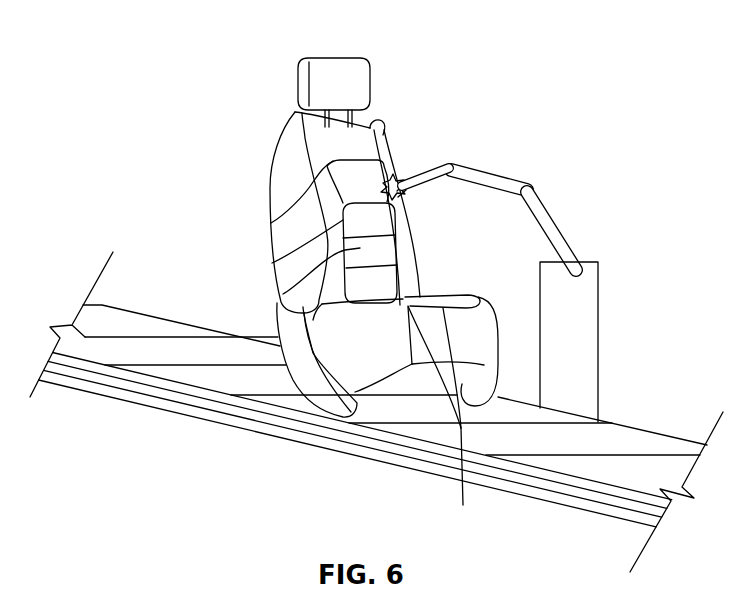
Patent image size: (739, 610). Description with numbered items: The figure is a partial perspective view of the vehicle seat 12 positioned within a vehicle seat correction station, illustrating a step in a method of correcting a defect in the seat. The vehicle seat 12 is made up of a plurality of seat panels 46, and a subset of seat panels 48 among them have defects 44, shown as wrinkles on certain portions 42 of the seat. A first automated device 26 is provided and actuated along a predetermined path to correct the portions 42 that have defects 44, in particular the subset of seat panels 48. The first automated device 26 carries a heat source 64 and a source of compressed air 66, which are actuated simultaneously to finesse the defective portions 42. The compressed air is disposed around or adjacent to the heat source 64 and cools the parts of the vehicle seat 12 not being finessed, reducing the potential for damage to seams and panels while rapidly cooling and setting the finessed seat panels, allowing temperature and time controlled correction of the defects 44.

The vehicle seat 12 is at (262, 97).
The first automated device 26 is at (493, 173).
The portions 42 is at (398, 214).
The defects 44 is at (372, 176).
The plurality of seat panels 46 is at (336, 158).
The subset of seat panels 48 is at (420, 335).
The heat source 64 is at (402, 192).
The source of compressed air 66 is at (408, 196).